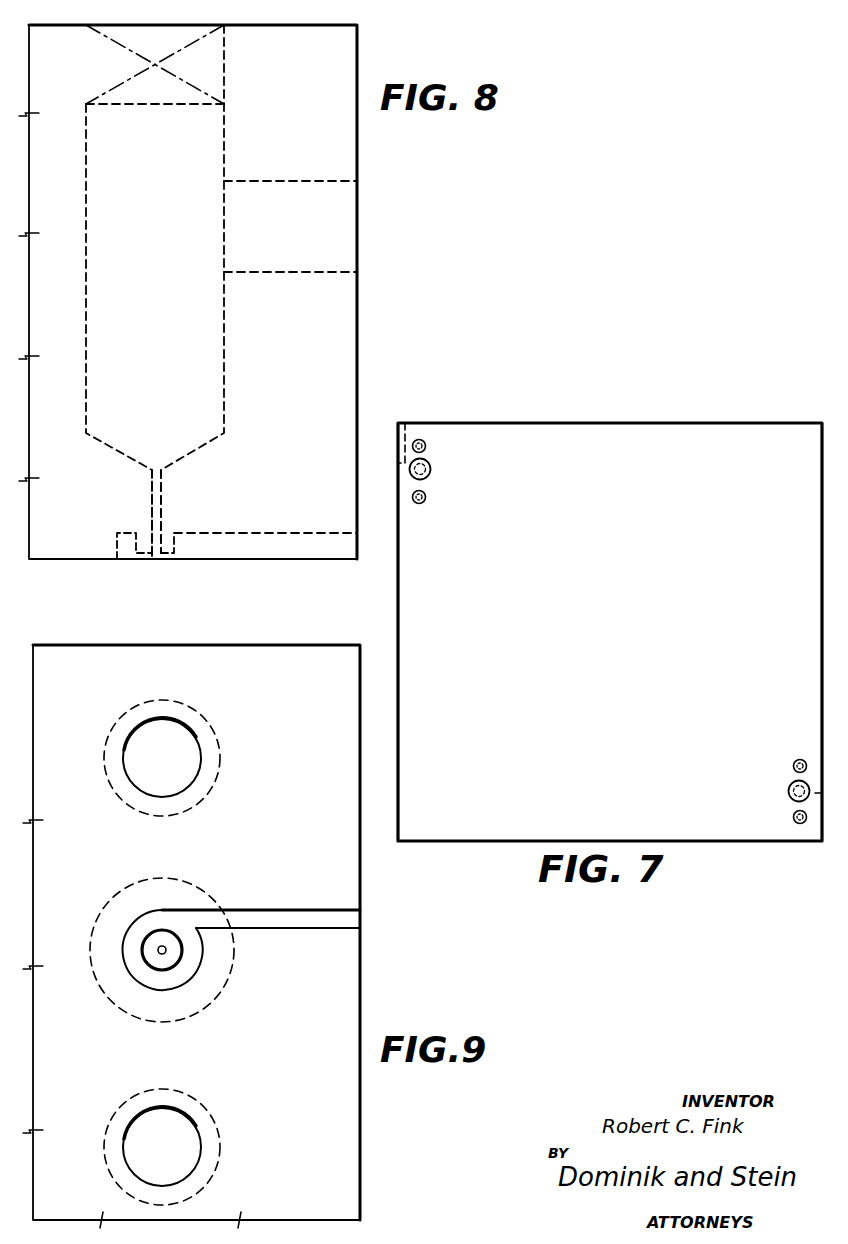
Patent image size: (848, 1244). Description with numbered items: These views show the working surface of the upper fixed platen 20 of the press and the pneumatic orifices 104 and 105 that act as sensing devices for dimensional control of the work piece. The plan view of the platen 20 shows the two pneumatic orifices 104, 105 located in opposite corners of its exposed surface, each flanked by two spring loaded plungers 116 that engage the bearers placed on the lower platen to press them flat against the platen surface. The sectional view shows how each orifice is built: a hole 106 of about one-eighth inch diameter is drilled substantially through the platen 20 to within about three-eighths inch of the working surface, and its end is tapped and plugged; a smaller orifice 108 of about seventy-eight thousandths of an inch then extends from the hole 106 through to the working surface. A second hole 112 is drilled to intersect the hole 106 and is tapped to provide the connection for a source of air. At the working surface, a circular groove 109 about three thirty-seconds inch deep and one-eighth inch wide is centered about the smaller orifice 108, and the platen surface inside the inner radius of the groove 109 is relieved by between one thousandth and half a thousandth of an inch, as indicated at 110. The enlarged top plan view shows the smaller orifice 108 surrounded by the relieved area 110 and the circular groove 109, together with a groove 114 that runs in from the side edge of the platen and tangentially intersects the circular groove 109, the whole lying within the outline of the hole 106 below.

In FIG. 7, the upper fixed platen 20 is at (628, 423).
In FIG. 7, the pneumatic orifice 104 is at (437, 466).
In FIG. 7, the pneumatic orifice 105 is at (780, 795).
In FIG. 8, the hole 106 is at (223, 139).
In FIG. 9, the hole 106 is at (221, 766).
In FIG. 8, the smaller orifice 108 is at (158, 498).
In FIG. 9, the smaller orifice 108 is at (148, 943).
In FIG. 8, the circular groove 109 is at (128, 543).
In FIG. 9, the circular groove 109 is at (138, 972).
In FIG. 8, the relieved surface area 110 is at (166, 558).
In FIG. 9, the relieved surface area 110 is at (165, 946).
In FIG. 8, the second hole 112 is at (330, 251).
In FIG. 8, the groove 114 is at (284, 545).
In FIG. 7, the groove 114 is at (411, 418).
In FIG. 9, the groove 114 is at (294, 915).
In FIG. 7, the spring loaded plunger 116 is at (427, 444).
In FIG. 9, the spring loaded plunger 116 is at (182, 737).